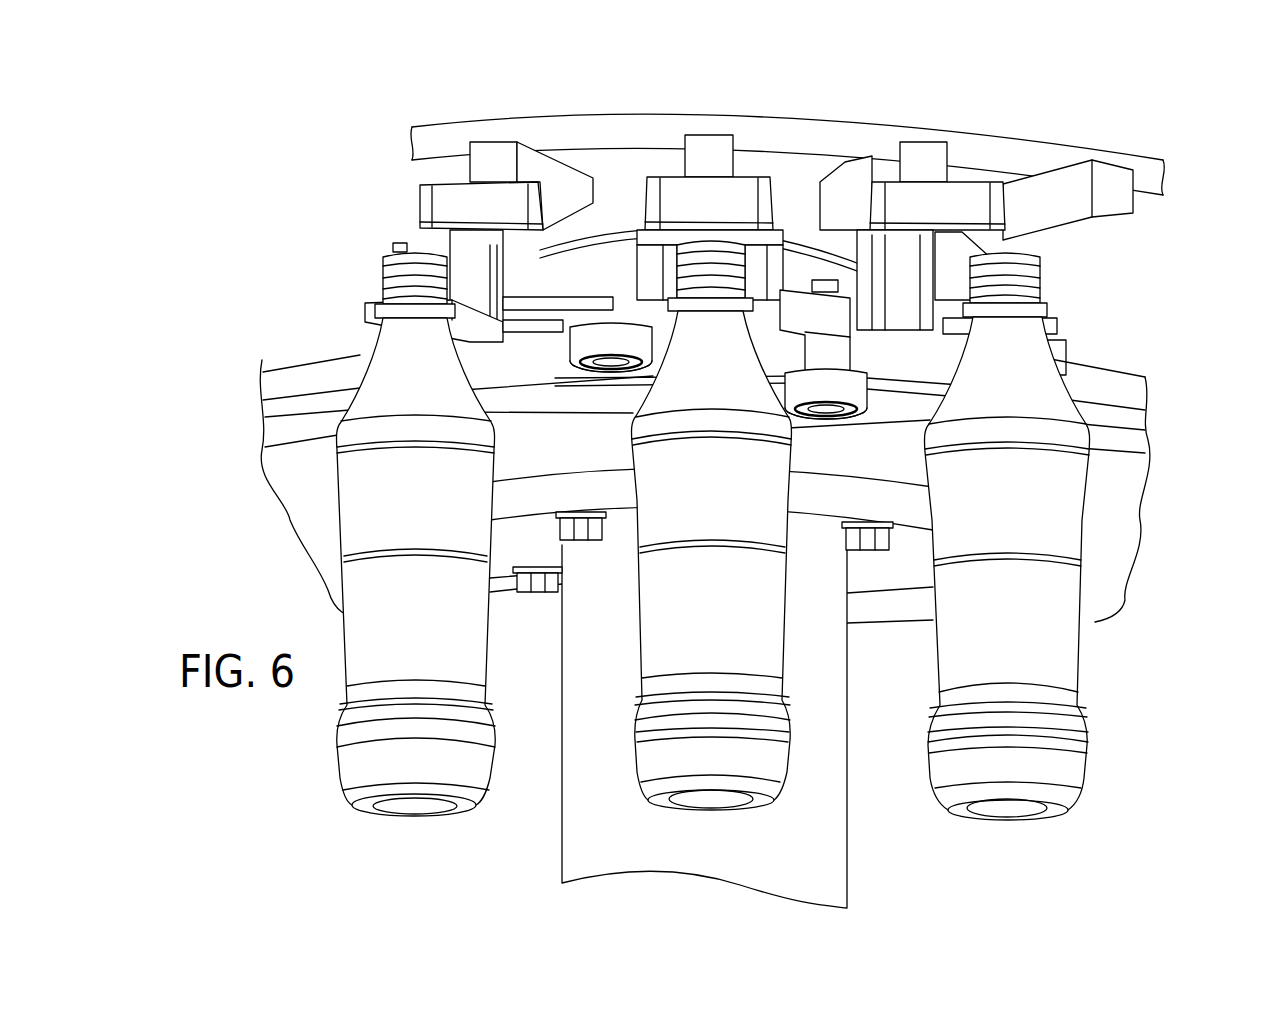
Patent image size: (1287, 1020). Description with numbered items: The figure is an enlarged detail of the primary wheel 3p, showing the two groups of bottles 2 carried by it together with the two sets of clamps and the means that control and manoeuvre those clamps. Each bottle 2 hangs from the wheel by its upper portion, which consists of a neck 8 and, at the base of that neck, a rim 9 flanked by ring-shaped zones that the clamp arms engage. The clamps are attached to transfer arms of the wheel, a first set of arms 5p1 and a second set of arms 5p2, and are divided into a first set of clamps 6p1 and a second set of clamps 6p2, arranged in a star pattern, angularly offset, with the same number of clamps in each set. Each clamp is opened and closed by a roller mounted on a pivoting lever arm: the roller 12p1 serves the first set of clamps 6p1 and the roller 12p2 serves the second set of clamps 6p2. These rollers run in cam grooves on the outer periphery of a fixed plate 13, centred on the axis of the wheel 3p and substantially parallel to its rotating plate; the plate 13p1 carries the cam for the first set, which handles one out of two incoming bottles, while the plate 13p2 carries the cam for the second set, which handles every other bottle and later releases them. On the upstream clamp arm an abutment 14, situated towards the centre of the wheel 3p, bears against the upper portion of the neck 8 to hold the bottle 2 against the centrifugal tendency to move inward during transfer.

The bottle 2 is at (1084, 656).
The primary wheel 3p is at (1085, 142).
The transfer arm of the first set 5p1 is at (695, 200).
The transfer arm of the second set 5p2 is at (1018, 98).
The first set of clamps 6p1 is at (761, 290).
The second set of clamps 6p2 is at (1177, 537).
The neck 8 is at (402, 263).
The rim 9 is at (390, 303).
The roller of the first set of clamps 12p1 is at (817, 385).
The roller of the second set of clamps 12p2 is at (1115, 283).
The plate 13 is at (1140, 462).
The plate for the first set of clamps 13p1 is at (1128, 435).
The plate for the second set of clamps 13p2 is at (1133, 393).
The abutment 14 is at (460, 277).